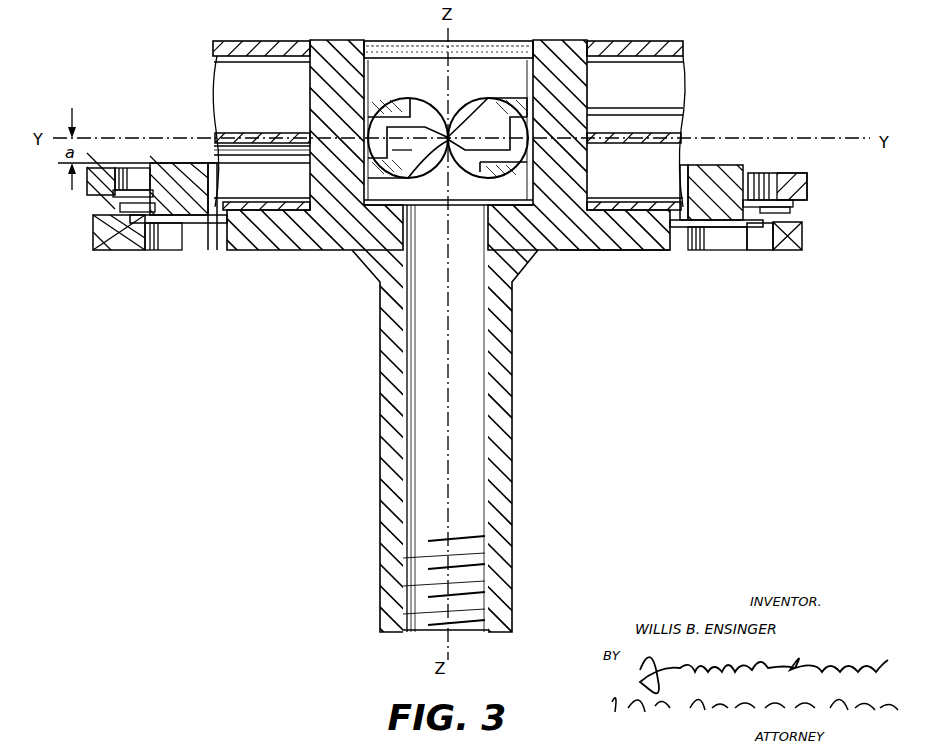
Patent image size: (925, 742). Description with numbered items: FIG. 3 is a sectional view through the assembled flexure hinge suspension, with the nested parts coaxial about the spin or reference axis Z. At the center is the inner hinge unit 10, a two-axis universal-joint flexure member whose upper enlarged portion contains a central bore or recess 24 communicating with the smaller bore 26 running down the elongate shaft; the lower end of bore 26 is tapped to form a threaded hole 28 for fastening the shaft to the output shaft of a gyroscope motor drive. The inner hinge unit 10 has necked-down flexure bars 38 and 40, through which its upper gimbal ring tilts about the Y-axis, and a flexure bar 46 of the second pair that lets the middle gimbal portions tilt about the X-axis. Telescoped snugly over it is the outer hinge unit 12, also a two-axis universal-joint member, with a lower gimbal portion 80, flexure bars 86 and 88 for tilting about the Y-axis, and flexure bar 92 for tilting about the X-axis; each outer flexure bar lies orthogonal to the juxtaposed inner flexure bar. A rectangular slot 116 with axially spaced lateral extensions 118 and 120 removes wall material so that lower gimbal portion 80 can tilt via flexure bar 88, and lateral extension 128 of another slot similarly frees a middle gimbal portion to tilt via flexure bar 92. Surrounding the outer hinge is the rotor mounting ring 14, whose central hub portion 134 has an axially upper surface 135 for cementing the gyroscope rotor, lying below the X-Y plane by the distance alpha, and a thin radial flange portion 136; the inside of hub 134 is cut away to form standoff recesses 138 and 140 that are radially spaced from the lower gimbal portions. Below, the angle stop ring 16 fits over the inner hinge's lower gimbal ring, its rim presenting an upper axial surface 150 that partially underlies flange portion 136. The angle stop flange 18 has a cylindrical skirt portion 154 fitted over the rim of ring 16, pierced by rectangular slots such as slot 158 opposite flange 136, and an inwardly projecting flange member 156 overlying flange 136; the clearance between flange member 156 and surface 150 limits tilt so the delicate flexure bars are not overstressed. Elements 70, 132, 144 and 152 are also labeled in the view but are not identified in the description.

The inner hinge unit 10 is at (450, 371).
The outer hinge unit 12 is at (672, 40).
The rotor mounting ring 14 is at (445, 203).
The angle stop ring 16 is at (648, 255).
The angle stop flange 18 is at (90, 222).
The central bore or recess 24 is at (372, 56).
The bore 26 is at (403, 430).
The threaded hole 28 is at (420, 632).
The flexure bar 38 is at (342, 222).
The flexure bar 40 is at (557, 224).
The flexure bar 46 is at (462, 131).
The axial bore 70 is at (442, 208).
The lower gimbal portion 80 is at (408, 138).
The flexure bar 86 is at (230, 133).
The flexure bar 88 is at (684, 144).
The flexure bar 92 is at (447, 134).
The rectangular slot 116 is at (528, 98).
The lateral extension 118 is at (400, 116).
The lateral extension 120 is at (488, 137).
The lateral extension 128 is at (376, 159).
The shell ring 132 is at (216, 146).
The central hub portion 134 is at (183, 216).
The axially upper surface 135 is at (718, 165).
The flange portion 136 is at (756, 251).
The standoff recess 138 is at (210, 167).
The standoff recess 140 is at (648, 249).
The bolt column 144 is at (185, 251).
The upper axial surface 150 is at (793, 212).
The bolt head 152 is at (783, 176).
The cylindrical wall or skirt portion 154 is at (805, 243).
The flange member 156 is at (124, 168).
The rectangular slot 158 is at (108, 204).